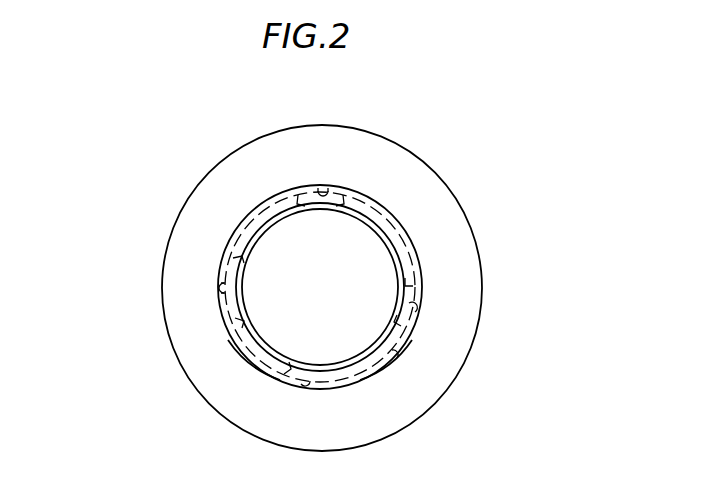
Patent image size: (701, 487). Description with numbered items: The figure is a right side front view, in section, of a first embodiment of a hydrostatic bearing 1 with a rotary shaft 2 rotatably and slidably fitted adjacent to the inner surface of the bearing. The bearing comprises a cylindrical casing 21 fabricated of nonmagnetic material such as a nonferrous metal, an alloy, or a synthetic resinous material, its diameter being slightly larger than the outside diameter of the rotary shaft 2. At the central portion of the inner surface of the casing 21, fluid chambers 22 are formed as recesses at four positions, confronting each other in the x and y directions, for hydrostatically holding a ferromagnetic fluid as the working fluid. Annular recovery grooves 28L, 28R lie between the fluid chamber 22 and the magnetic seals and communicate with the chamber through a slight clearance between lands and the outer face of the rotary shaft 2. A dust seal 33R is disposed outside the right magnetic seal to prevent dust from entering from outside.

The hydrostatic bearing 1 is at (222, 156).
The rotary shaft 2 is at (365, 250).
The cylindrical casing 21 is at (409, 168).
The fluid chambers 22 is at (323, 191).
The dust seal 33R is at (420, 292).
The annular recovery groove 28R is at (393, 355).
The annular recovery groove 28L is at (254, 360).